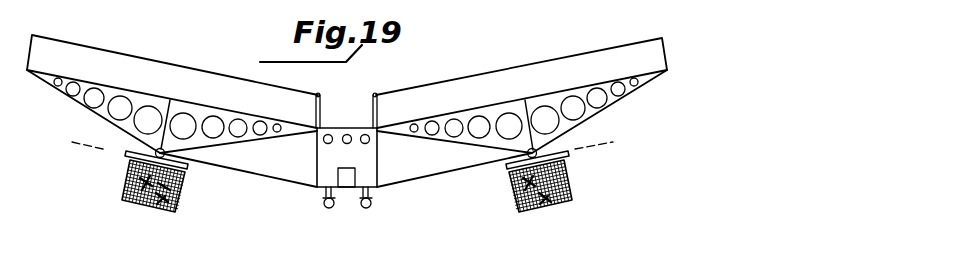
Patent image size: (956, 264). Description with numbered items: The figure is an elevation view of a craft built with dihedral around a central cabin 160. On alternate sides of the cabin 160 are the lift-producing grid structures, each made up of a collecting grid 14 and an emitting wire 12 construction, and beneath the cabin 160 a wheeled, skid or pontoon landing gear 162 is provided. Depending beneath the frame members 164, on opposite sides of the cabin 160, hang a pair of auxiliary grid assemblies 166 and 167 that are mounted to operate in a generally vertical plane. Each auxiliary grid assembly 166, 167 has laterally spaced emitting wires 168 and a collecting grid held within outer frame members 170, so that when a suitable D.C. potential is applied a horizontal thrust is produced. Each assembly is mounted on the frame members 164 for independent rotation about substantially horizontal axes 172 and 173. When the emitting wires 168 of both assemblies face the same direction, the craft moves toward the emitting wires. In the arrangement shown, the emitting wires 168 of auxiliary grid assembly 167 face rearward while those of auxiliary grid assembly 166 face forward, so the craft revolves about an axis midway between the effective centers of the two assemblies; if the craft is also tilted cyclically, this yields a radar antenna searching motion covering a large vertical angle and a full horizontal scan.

The emitting wire 12 is at (197, 69).
The collecting grid 14 is at (210, 107).
The central cabin 160 is at (343, 127).
The landing gear 162 is at (362, 208).
The frame members 164 is at (82, 100).
The auxiliary grid assembly 166 is at (145, 202).
The auxiliary grid assembly 167 is at (533, 207).
The emitting wires 168 is at (181, 189).
The outer frame members 170 is at (122, 183).
The horizontal axis 172 is at (100, 148).
The horizontal axis 173 is at (582, 152).